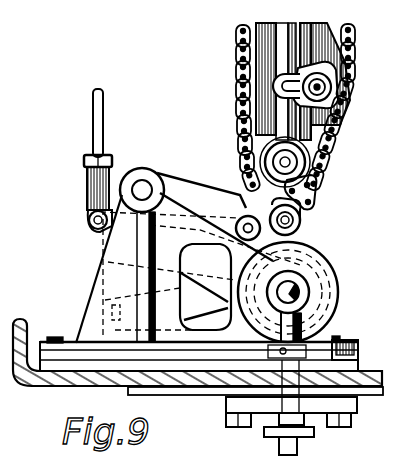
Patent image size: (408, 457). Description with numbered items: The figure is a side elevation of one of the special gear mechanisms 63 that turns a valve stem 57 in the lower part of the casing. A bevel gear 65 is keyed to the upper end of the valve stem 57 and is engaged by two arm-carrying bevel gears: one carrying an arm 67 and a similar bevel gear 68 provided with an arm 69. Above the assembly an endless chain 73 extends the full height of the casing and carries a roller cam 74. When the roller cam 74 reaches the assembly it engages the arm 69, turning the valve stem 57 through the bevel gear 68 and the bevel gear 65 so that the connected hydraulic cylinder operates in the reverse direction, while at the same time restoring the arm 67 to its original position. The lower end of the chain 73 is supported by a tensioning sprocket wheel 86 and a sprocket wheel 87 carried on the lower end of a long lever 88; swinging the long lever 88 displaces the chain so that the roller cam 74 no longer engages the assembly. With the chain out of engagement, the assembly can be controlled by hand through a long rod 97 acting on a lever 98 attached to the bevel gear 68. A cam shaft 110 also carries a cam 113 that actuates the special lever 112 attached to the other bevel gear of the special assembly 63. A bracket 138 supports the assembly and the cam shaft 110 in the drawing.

The valve stem 57 is at (298, 444).
The special gear mechanism 63 is at (375, 315).
The bevel gear 65 is at (338, 334).
The arm 67 is at (250, 206).
The bevel gear 68 is at (328, 274).
The arm 69 is at (300, 226).
The endless chain 73 is at (238, 52).
The roller cam 74 is at (313, 194).
The tensioning sprocket wheel 86 is at (318, 68).
The sprocket wheel 87 is at (312, 152).
The long lever 88 is at (262, 35).
The long rod 97 is at (94, 117).
The lever 98 is at (100, 232).
The cam shaft 110 is at (150, 177).
The special lever 112 is at (92, 302).
The cam 113 is at (204, 187).
The bracket 138 is at (96, 322).